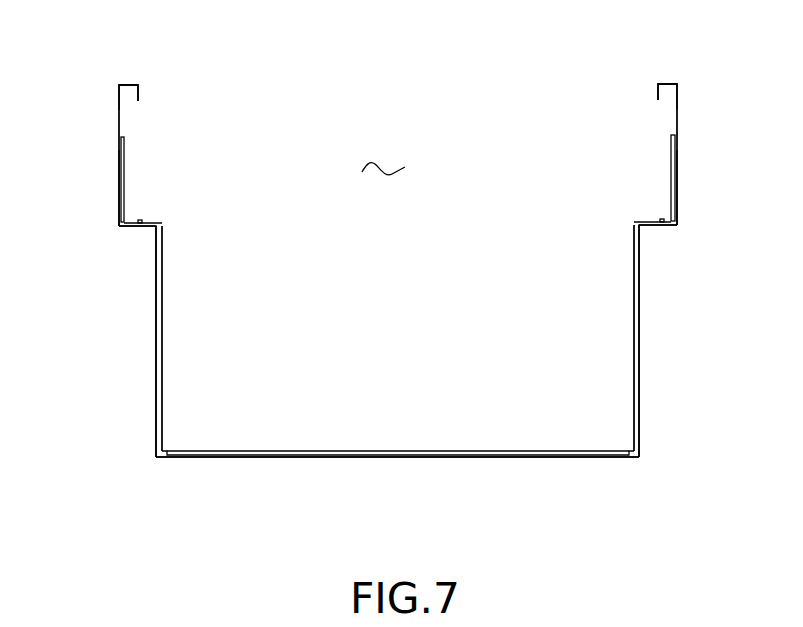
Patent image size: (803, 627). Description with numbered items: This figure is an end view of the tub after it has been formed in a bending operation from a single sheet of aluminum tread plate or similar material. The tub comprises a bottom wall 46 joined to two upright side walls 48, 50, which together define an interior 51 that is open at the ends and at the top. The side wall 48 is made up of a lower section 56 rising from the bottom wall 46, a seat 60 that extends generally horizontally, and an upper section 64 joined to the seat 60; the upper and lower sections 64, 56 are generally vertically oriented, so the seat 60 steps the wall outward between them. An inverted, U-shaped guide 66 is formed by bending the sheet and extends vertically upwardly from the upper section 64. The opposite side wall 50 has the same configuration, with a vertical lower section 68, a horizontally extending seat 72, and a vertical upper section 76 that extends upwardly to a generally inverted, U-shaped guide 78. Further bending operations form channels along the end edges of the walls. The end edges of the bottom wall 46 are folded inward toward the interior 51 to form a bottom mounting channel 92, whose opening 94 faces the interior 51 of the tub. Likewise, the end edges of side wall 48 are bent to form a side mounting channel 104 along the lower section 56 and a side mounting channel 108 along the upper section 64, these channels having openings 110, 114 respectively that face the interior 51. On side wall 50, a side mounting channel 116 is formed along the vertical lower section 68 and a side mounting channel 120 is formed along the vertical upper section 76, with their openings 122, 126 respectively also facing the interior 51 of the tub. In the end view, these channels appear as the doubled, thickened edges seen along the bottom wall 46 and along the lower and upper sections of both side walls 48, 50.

The bottom wall 46 is at (277, 456).
The side wall 48 is at (118, 314).
The side wall 50 is at (678, 313).
The interior 51 is at (388, 160).
The lower section 56 is at (157, 410).
The seat 60 is at (133, 227).
The upper section 64 is at (118, 115).
The inverted U-shaped guide 66 is at (130, 85).
The lower section 68 is at (639, 410).
The seat 72 is at (657, 227).
The upper section 76 is at (677, 117).
The inverted U-shaped guide 78 is at (665, 83).
The bottom mounting channel 92 is at (495, 449).
The opening 94 is at (370, 450).
The side mounting channel 104 is at (158, 370).
The side mounting channel 108 is at (123, 167).
The opening 110 is at (157, 280).
The opening 114 is at (118, 199).
The side mounting channel 116 is at (633, 347).
The side mounting channel 120 is at (677, 193).
The opening 122 is at (640, 268).
The opening 126 is at (672, 163).